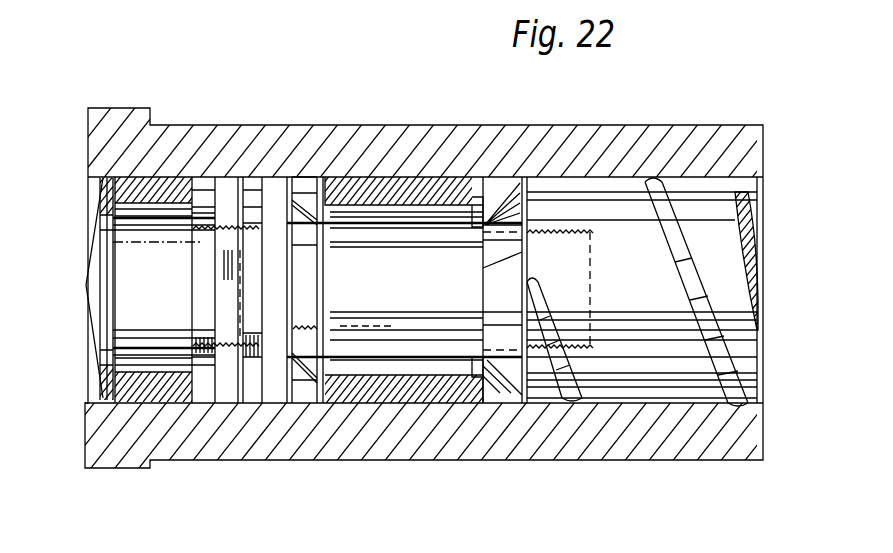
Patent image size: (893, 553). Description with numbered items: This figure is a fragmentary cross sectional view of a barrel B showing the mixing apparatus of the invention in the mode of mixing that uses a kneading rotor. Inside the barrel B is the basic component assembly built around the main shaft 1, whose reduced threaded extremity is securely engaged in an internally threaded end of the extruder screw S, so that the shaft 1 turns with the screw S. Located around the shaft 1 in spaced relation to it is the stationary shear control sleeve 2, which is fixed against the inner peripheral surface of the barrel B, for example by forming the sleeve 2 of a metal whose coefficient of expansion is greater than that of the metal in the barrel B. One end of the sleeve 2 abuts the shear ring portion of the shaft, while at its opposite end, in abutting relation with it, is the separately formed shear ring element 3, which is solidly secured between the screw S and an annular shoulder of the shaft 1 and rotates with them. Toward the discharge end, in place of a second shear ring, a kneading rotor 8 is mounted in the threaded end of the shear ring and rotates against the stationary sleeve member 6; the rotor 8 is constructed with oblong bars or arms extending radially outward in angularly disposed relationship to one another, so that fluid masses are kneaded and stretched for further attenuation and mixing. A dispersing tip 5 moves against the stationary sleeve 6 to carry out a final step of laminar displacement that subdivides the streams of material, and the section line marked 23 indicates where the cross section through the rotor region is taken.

The barrel B is at (730, 127).
The screw S is at (615, 217).
The main shaft 1 is at (369, 227).
The stationary shear control sleeve 2 is at (463, 177).
The shear ring element 3 is at (508, 193).
The dispersing tip 5 is at (89, 234).
The sleeve member 6 is at (167, 178).
The kneading rotor 8 is at (266, 188).
The section line 23- 23 is at (219, 502).